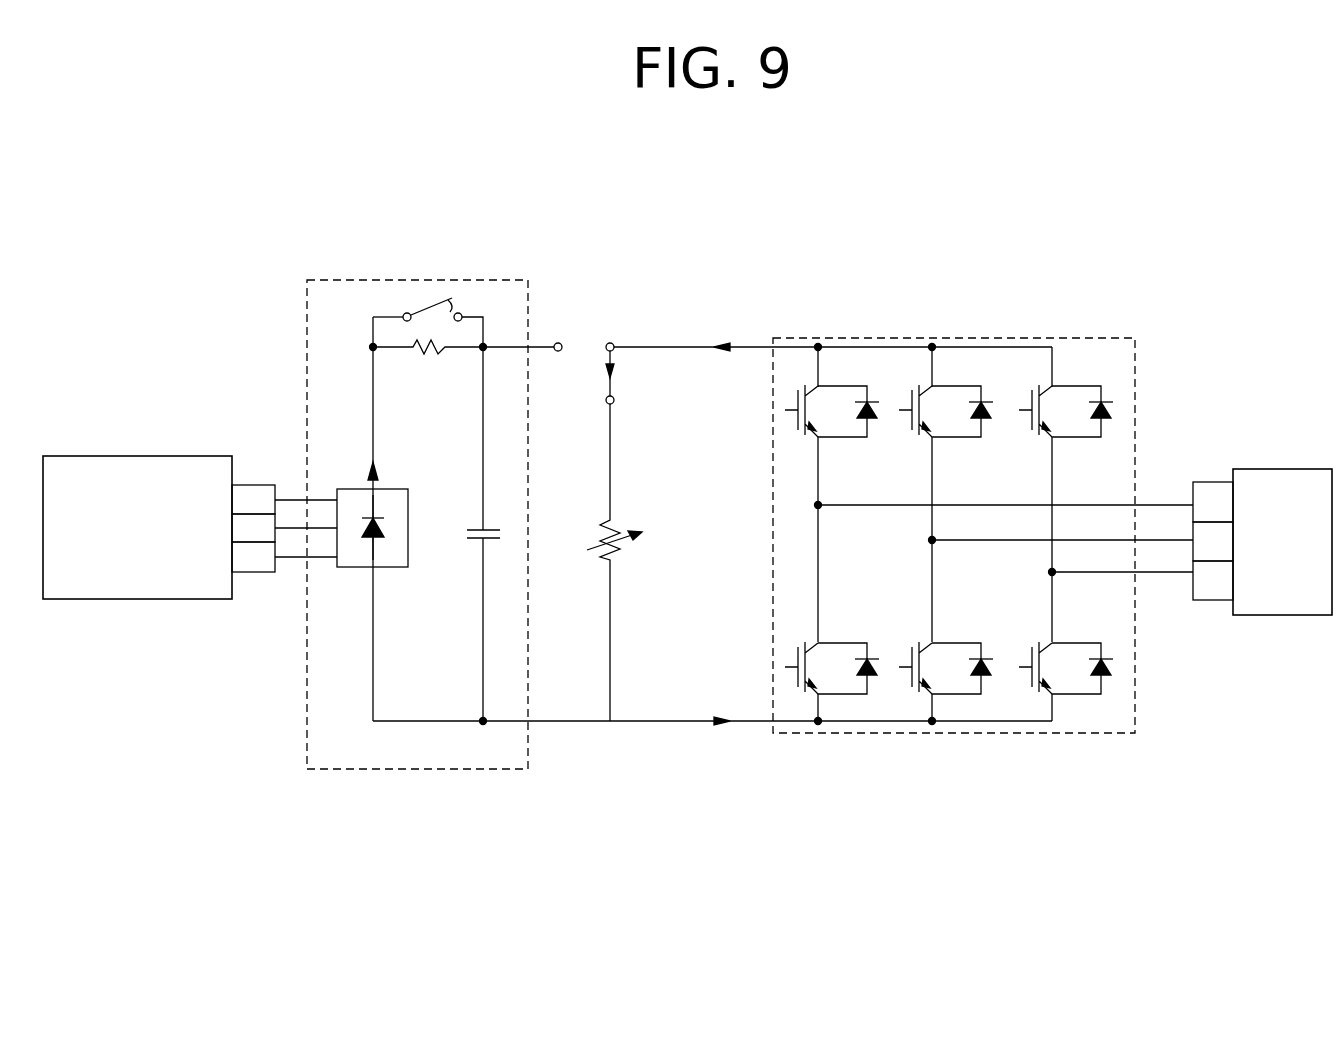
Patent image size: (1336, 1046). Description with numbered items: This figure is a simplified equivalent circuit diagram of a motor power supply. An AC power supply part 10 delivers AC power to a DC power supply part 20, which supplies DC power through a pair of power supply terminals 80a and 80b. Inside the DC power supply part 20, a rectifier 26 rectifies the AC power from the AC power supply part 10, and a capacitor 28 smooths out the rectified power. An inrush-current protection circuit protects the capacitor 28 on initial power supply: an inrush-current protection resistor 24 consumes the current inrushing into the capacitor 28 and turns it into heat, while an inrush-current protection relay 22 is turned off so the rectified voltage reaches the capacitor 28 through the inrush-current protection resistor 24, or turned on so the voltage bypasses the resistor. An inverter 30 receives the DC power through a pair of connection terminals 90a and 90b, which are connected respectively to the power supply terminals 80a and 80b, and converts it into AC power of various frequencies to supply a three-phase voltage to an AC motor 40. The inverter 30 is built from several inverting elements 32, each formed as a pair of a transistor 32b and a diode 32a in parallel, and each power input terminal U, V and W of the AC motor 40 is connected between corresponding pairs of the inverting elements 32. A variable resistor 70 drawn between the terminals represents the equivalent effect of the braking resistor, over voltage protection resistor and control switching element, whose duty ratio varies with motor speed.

The AC power supply part 10 is at (138, 454).
The DC power supply part 20 is at (446, 770).
The inrush-current protection relay 22 is at (428, 302).
The inrush-current protection resistor 24 is at (453, 346).
The rectifier 26 is at (352, 557).
The capacitor 28 is at (480, 535).
The inverter 30 is at (954, 546).
The inverting element 32 is at (843, 458).
The diode 32a is at (868, 437).
The transistor 32b is at (818, 438).
The AC motor 40 is at (1277, 468).
The variable resistor 70 is at (618, 524).
The power supply terminal 80a is at (486, 346).
The power supply terminal 80b is at (485, 730).
The connection terminal 90a is at (818, 346).
The connection terminal 90b is at (818, 724).